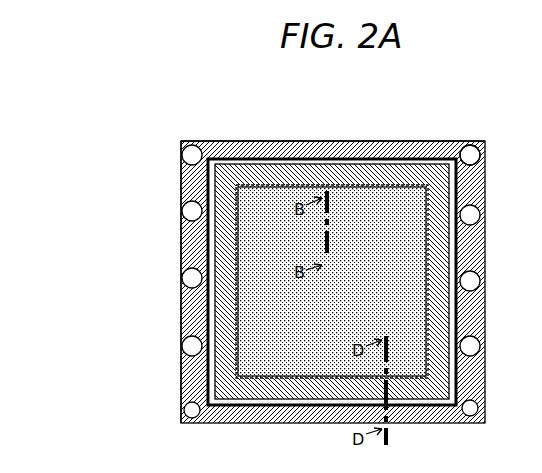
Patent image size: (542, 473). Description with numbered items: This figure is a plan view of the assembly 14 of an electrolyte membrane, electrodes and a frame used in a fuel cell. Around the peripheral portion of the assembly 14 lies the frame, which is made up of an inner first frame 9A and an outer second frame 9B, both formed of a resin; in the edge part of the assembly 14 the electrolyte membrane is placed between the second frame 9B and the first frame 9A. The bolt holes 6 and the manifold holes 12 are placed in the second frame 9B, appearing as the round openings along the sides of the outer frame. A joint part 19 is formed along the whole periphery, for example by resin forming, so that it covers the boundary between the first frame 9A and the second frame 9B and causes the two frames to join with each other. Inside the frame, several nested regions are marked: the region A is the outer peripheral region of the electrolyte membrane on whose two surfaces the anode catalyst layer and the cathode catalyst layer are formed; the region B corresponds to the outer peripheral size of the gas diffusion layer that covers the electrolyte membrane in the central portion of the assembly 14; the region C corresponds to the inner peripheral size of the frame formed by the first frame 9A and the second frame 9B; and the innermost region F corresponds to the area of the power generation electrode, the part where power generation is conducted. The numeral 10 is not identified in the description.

The assembly 14 is at (52, 192).
The bolt holes 6 is at (172, 410).
The first frame 9A is at (212, 132).
The second frame 9B is at (170, 158).
The display panel 10 is at (262, 262).
The manifold holes 12 is at (170, 295).
The joint part 19 is at (265, 132).
The region A is at (297, 132).
The region B is at (342, 133).
The region C is at (387, 133).
The region F is at (421, 133).